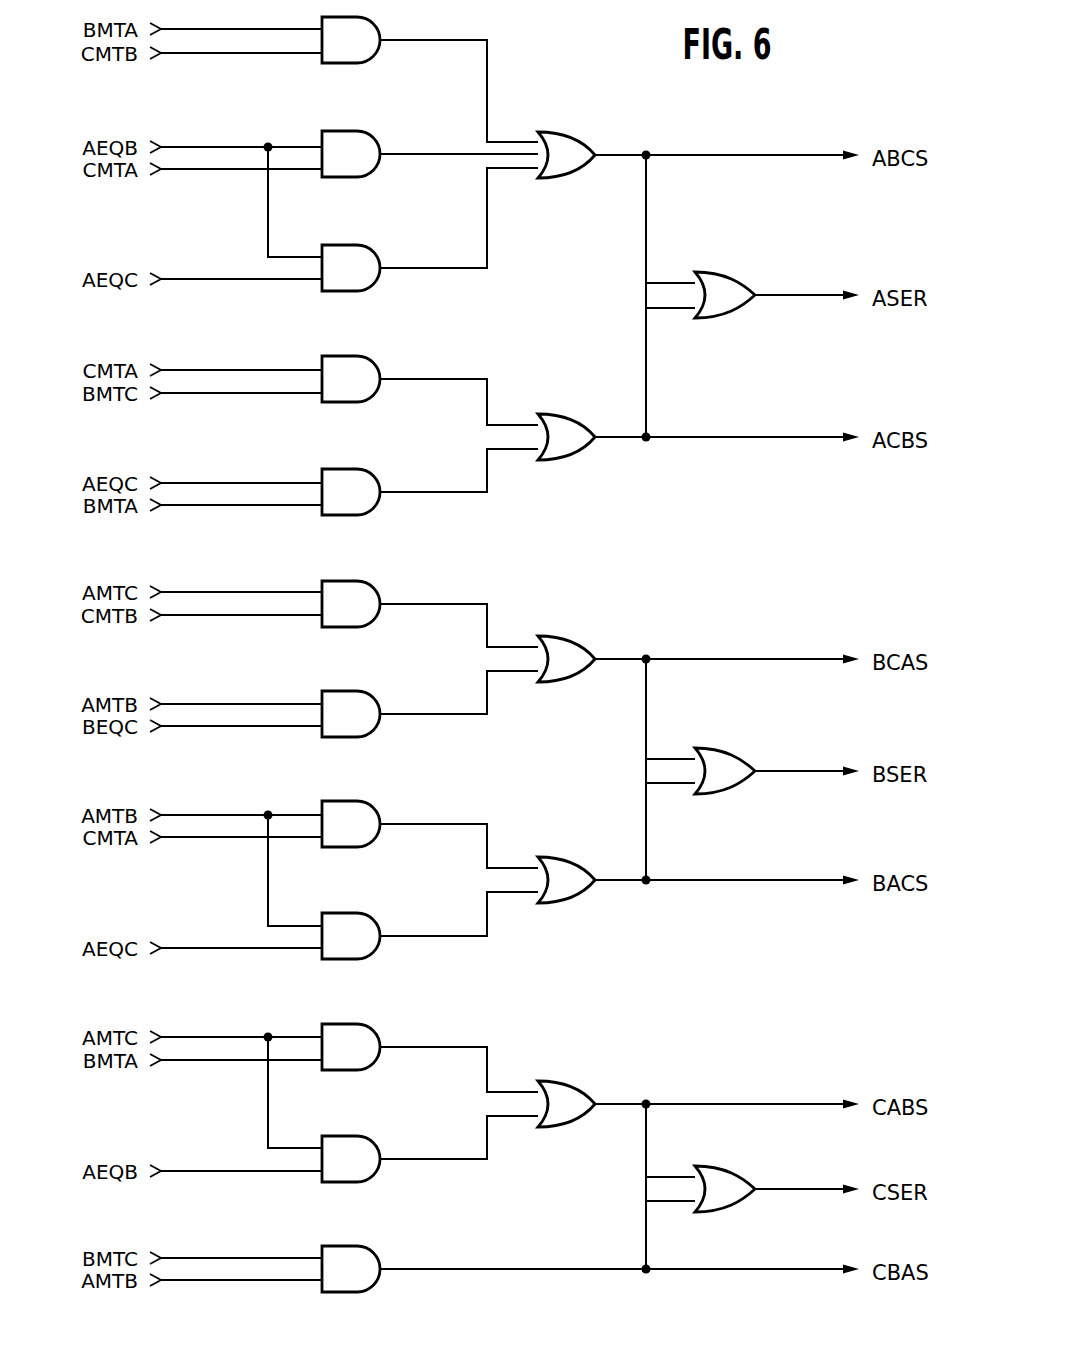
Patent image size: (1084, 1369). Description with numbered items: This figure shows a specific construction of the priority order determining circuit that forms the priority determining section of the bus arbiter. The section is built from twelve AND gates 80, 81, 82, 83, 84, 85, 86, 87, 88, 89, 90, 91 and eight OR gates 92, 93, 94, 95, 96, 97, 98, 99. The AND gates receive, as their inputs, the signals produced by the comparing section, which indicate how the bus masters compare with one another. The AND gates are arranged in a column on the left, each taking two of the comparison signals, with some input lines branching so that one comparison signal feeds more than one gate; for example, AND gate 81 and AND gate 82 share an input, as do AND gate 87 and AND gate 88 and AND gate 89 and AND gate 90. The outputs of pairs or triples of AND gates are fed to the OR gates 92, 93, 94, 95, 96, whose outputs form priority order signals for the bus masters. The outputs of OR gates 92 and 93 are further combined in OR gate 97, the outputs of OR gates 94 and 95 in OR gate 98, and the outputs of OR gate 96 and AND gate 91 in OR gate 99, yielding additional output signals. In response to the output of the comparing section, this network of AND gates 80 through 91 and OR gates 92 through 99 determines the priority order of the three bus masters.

The AND gate 80 is at (378, 30).
The AND gate 81 is at (374, 149).
The AND gate 82 is at (374, 262).
The AND gate 83 is at (374, 373).
The AND gate 84 is at (374, 487).
The AND gate 85 is at (374, 600).
The AND gate 86 is at (374, 708).
The AND gate 87 is at (374, 816).
The AND gate 88 is at (374, 929).
The AND gate 89 is at (374, 1040).
The AND gate 90 is at (374, 1152).
The AND gate 91 is at (374, 1262).
The OR gate 92 is at (580, 135).
The OR gate 93 is at (578, 422).
The OR gate 94 is at (578, 642).
The OR gate 95 is at (578, 864).
The OR gate 96 is at (578, 1088).
The OR gate 97 is at (740, 280).
The OR gate 98 is at (737, 760).
The OR gate 99 is at (737, 1180).